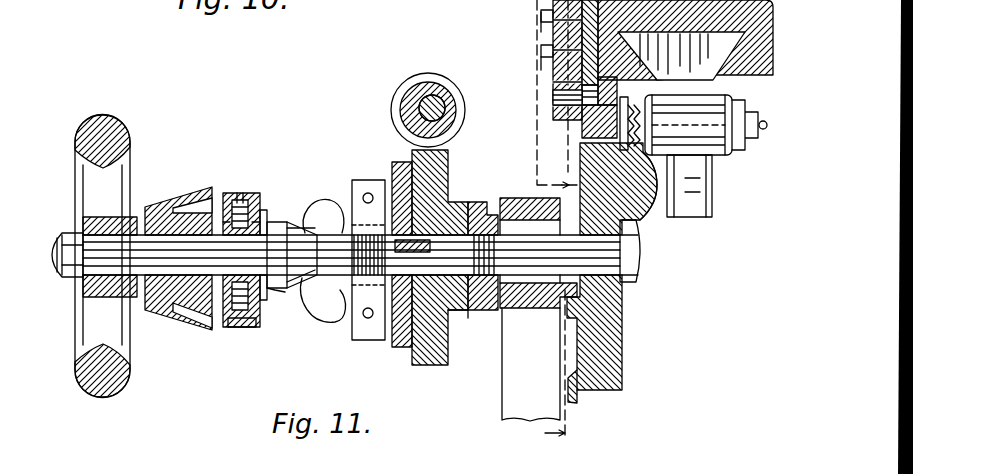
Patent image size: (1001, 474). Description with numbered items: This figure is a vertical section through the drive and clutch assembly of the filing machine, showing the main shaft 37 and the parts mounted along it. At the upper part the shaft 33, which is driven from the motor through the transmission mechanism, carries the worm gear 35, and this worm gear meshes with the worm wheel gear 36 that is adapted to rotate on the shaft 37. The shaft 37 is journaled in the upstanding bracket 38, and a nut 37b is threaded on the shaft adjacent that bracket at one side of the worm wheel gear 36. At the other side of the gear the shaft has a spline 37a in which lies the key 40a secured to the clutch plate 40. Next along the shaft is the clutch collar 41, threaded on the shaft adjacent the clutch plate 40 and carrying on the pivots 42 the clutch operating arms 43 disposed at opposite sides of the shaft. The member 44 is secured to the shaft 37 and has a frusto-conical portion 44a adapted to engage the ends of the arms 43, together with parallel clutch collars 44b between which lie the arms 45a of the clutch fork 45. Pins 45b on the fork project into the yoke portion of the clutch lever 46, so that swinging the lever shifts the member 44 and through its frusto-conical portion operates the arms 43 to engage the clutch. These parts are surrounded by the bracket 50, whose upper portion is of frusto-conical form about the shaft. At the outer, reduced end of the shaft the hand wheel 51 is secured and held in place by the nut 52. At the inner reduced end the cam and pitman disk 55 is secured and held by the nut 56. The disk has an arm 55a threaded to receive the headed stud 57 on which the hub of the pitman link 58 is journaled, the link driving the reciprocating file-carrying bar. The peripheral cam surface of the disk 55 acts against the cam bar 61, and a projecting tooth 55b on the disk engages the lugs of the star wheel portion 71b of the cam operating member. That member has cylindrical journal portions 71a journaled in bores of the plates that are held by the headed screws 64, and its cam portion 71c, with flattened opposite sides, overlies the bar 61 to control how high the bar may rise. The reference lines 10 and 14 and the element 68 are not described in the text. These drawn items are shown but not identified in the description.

The bed / base reference line 10 is at (558, 376).
The housing reference line 14 is at (545, 94).
The shaft 33 is at (448, 90).
The worm gear 35 is at (418, 88).
The worm wheel gear 36 is at (452, 355).
The shaft 37 is at (450, 235).
The spline 37a is at (503, 242).
The nut 37b is at (465, 312).
The upstanding bracket 38 is at (515, 412).
The clutch plate 40 is at (375, 345).
The key 40a is at (404, 180).
The clutch collar 41 is at (348, 340).
The pivots 42 is at (368, 192).
The clutch operating arms 43 is at (326, 200).
The member 44 is at (283, 222).
The frusto-conical portion 44a is at (296, 295).
The clutch collars 44b is at (280, 200).
The clutch fork 45 is at (245, 193).
The arms 45a is at (236, 327).
The pins 45b is at (244, 318).
The clutch lever 46 is at (226, 215).
The bracket 50 is at (158, 310).
The hand wheel 51 is at (128, 380).
The nut 52 is at (65, 278).
The cam and pitman disk 55 is at (622, 312).
The arm 55a is at (652, 175).
The projecting tooth 55b is at (585, 398).
The nut 56 is at (640, 255).
The headed stud 57 is at (738, 142).
The pitman link 58 is at (735, 80).
The cam bar 61 is at (565, 125).
The headed screws 64 is at (545, 38).
The bushing 68 is at (638, 62).
The cylindrical journal portions 71a is at (585, 100).
The star wheel portion 71b is at (565, 72).
The cam portion 71c is at (580, 115).